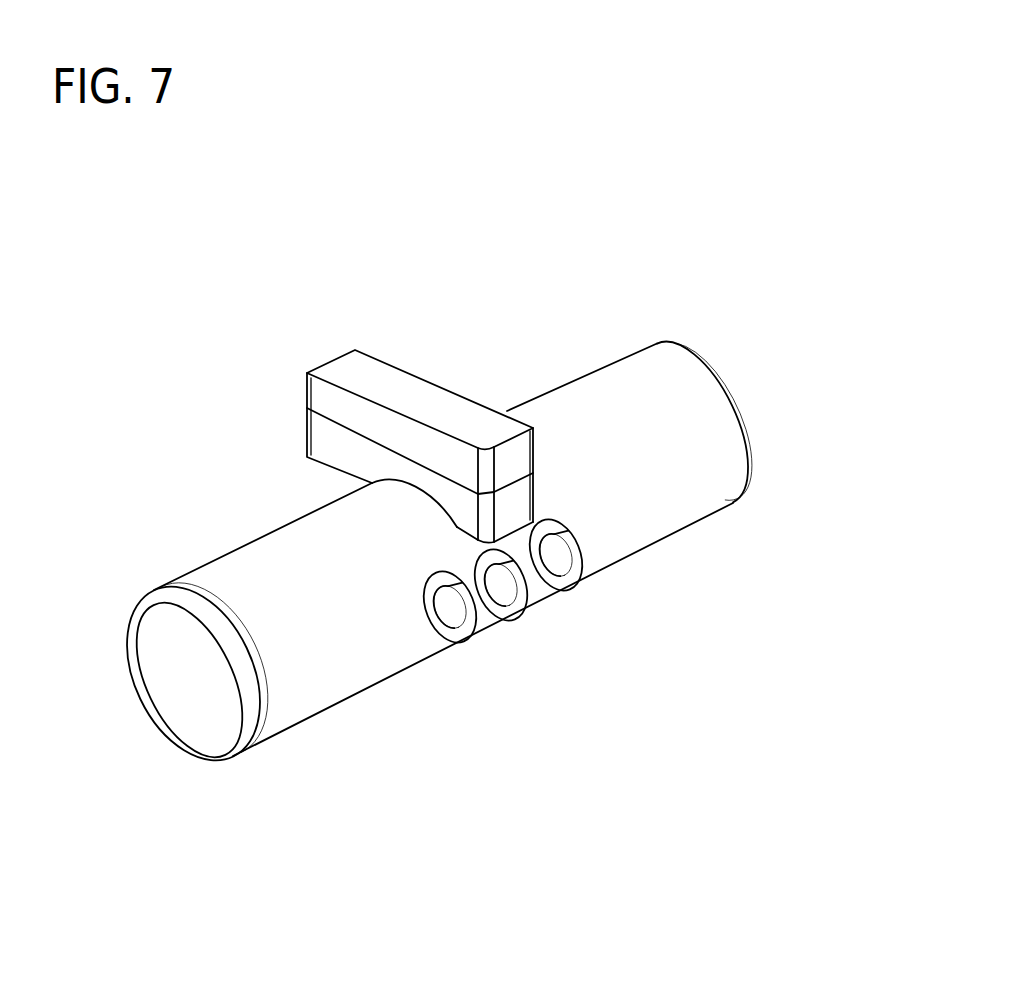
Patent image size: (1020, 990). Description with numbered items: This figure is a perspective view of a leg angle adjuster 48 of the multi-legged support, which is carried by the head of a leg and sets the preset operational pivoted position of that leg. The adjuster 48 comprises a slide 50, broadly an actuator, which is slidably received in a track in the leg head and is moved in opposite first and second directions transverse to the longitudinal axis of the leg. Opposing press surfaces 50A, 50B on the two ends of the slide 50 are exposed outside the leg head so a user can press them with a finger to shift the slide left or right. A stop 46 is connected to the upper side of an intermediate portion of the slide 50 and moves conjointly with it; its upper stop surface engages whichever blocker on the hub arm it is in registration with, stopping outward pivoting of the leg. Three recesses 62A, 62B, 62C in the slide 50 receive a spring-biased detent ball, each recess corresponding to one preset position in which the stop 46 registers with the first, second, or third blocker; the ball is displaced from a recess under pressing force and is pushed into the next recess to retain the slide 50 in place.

The adjuster 48 is at (694, 218).
The stop 46 is at (407, 388).
The slide 50 is at (663, 543).
The first press surface 50A is at (182, 703).
The second press surface 50B is at (722, 383).
The first recess 62A is at (443, 613).
The second recess 62B is at (507, 585).
The third recess 62C is at (577, 560).